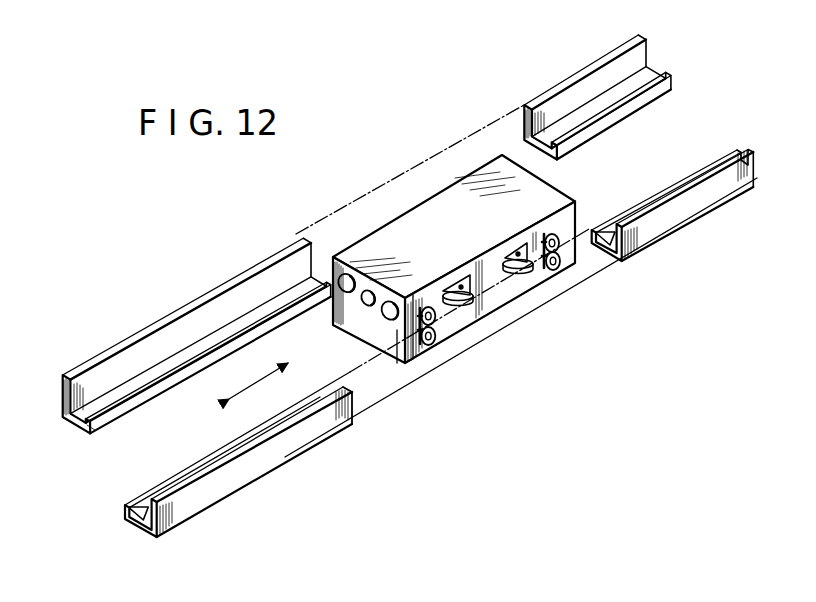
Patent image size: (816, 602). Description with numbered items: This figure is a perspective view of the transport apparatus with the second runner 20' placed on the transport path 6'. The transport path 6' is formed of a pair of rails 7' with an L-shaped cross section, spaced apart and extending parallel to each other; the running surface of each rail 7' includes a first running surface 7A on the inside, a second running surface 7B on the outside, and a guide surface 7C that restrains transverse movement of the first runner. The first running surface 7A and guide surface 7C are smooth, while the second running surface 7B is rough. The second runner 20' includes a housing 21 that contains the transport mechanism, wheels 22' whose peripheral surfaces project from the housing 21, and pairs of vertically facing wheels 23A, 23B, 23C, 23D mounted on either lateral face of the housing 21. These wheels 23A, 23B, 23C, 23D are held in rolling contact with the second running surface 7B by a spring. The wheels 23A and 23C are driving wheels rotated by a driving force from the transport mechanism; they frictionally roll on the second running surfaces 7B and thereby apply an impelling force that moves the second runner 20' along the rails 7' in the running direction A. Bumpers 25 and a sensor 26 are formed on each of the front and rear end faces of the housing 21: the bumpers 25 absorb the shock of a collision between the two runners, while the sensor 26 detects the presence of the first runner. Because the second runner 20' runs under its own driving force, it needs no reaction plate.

The transport path 6' is at (400, 306).
The rail 7' is at (398, 306).
The first running surface 7A is at (125, 404).
The second running surface 7B is at (70, 418).
The guide surface 7C is at (207, 315).
The second runner 20' is at (378, 312).
The housing 21 is at (494, 278).
The wheels 22' is at (507, 321).
The driving wheel 23A is at (435, 327).
The wheel 23B is at (551, 236).
The driving wheel 23C is at (423, 345).
The wheel 23D is at (556, 267).
The bumper 25 is at (353, 268).
The sensor 26 is at (367, 318).
The direction of sliding movement A is at (258, 378).